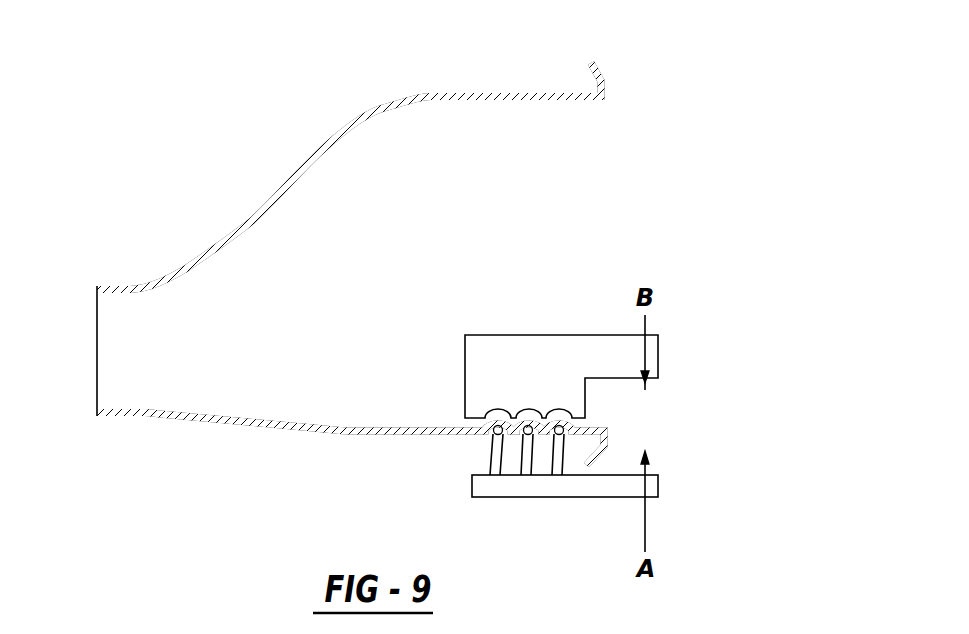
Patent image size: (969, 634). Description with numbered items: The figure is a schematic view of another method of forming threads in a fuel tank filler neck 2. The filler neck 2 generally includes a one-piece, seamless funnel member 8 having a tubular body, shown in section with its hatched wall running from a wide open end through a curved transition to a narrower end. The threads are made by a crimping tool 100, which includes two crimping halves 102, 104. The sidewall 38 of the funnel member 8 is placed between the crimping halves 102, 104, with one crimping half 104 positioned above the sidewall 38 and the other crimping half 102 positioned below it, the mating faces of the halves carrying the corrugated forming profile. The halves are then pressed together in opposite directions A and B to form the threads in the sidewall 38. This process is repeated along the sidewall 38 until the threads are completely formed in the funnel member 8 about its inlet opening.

The filler neck 2 is at (382, 104).
The funnel member 8 is at (283, 444).
The sidewall 38 is at (386, 434).
The crimping tool 100 is at (650, 407).
The crimping half 102 is at (546, 487).
The crimping half 104 is at (544, 383).